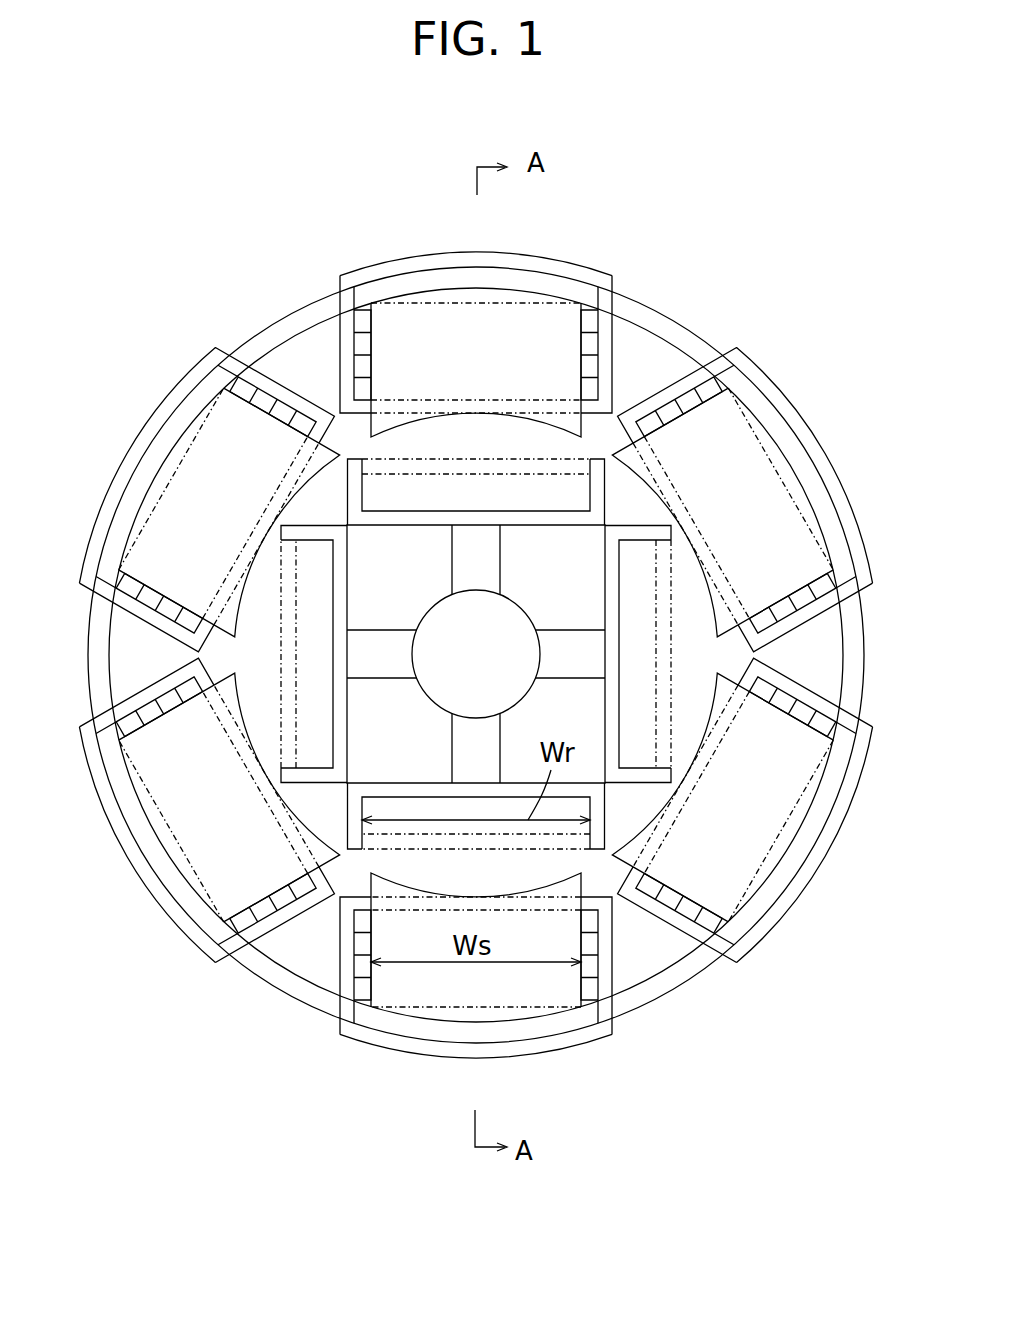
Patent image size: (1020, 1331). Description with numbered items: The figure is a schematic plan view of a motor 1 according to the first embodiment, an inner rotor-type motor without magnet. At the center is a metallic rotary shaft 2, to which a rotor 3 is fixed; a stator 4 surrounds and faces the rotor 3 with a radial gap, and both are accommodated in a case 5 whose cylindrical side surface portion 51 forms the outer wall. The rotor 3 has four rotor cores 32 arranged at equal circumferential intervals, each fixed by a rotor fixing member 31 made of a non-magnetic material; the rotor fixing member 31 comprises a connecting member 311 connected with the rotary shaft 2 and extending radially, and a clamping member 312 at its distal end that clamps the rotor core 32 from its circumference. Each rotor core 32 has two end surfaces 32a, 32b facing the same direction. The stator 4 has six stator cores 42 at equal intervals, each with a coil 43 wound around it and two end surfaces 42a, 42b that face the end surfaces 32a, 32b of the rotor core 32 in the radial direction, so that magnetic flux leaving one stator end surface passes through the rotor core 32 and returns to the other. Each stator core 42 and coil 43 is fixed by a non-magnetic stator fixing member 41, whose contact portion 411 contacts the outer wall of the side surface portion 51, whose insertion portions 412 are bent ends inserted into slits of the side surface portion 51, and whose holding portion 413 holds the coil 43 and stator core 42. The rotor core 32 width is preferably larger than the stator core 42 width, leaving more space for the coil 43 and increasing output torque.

The motor 1 is at (706, 188).
The rotary shaft 2 is at (447, 677).
The rotor 3 is at (457, 440).
The stator 4 is at (482, 346).
The case 5 is at (692, 318).
The rotor fixing member 31 is at (421, 533).
The rotor core 32 is at (516, 453).
The end surface 32a is at (469, 450).
The end surface 32b is at (444, 355).
The stator fixing member 41 is at (603, 265).
The stator core 42 is at (491, 298).
The end surface 42a is at (362, 403).
The end surface 42b is at (296, 460).
The coil 43 is at (603, 378).
The side surface portion 51 is at (277, 993).
The connecting member 311 is at (484, 556).
The clamping member 312 is at (553, 522).
The contact portion 411 is at (428, 262).
The insertion portion 412 is at (343, 345).
The holding portion 413 is at (335, 448).